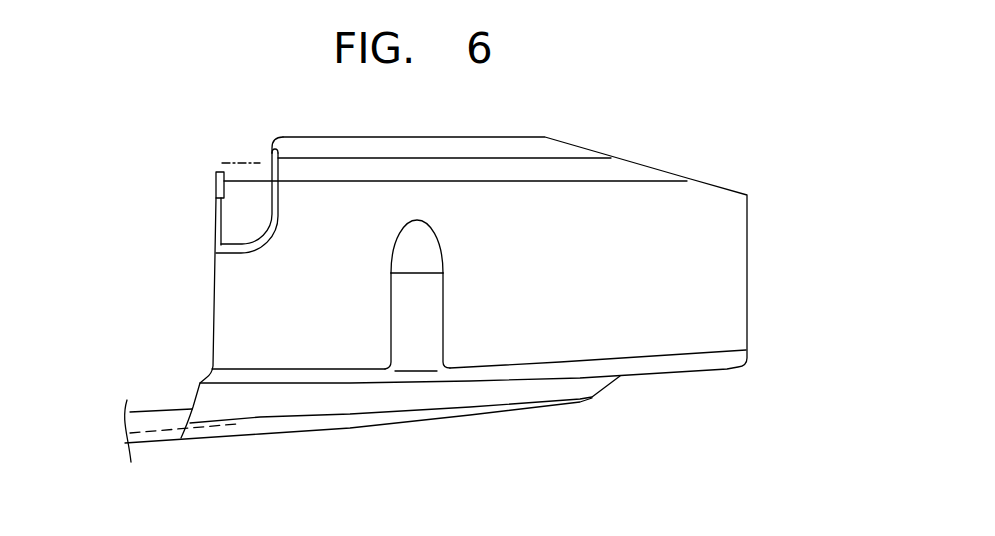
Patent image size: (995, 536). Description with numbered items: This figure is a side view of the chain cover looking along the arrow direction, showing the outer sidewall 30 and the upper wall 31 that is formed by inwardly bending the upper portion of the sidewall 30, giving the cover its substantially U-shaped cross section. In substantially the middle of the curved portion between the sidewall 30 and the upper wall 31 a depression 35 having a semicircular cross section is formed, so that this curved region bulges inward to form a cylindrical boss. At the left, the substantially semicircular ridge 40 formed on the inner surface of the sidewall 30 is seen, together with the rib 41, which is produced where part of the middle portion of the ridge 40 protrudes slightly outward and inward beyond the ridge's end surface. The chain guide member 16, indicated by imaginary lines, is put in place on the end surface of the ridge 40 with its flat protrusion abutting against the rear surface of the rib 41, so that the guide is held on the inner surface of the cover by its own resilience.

The chain guide member 16 is at (260, 163).
The sidewall 30 is at (297, 435).
The upper wall 31 is at (627, 343).
The depression 35 is at (420, 348).
The semicircular ridge 40 is at (235, 208).
The rib 41 is at (216, 180).